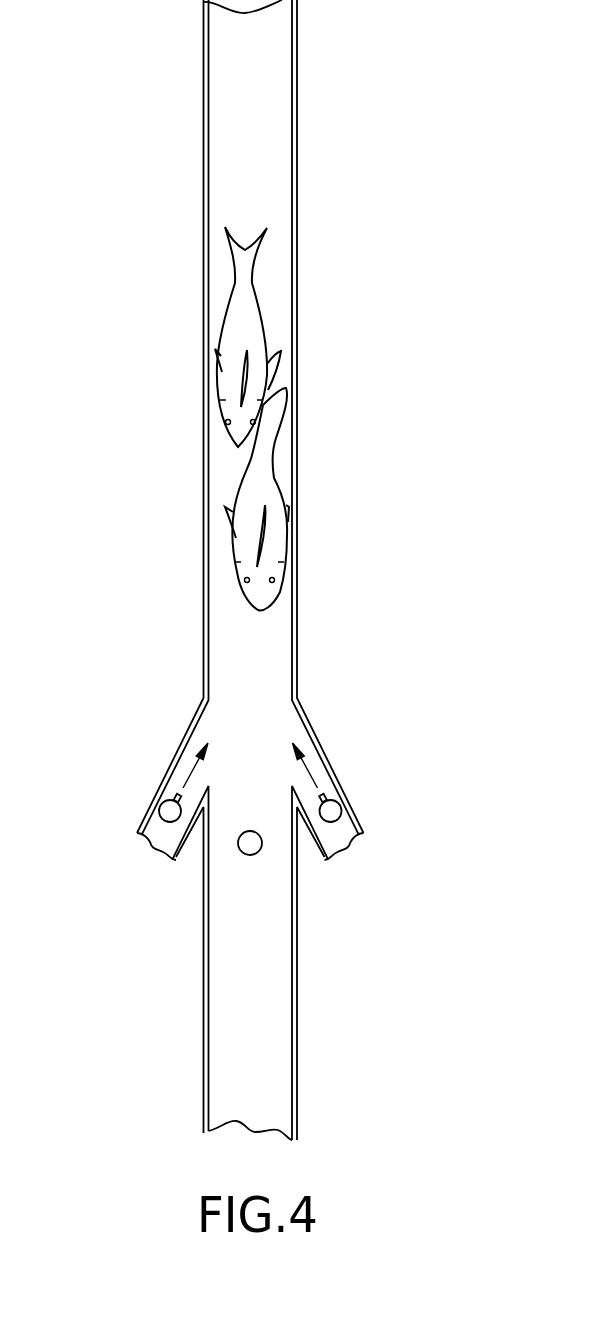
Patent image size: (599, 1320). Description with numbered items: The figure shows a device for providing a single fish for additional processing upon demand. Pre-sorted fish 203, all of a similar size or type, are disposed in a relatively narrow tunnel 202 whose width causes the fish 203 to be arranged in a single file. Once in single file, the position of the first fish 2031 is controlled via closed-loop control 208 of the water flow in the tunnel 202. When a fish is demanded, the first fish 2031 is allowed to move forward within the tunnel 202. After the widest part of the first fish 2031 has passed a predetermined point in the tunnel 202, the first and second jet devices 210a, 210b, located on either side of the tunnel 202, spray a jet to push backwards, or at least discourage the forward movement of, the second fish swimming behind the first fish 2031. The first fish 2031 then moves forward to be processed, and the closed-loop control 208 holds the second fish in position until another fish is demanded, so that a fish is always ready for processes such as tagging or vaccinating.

The tunnel 202 is at (297, 607).
The pre-sorted fish 203 is at (227, 372).
The first fish 2031 is at (237, 525).
The closed-loop control 208 is at (253, 845).
The first jet device 210a is at (336, 812).
The second jet device 210b is at (165, 812).